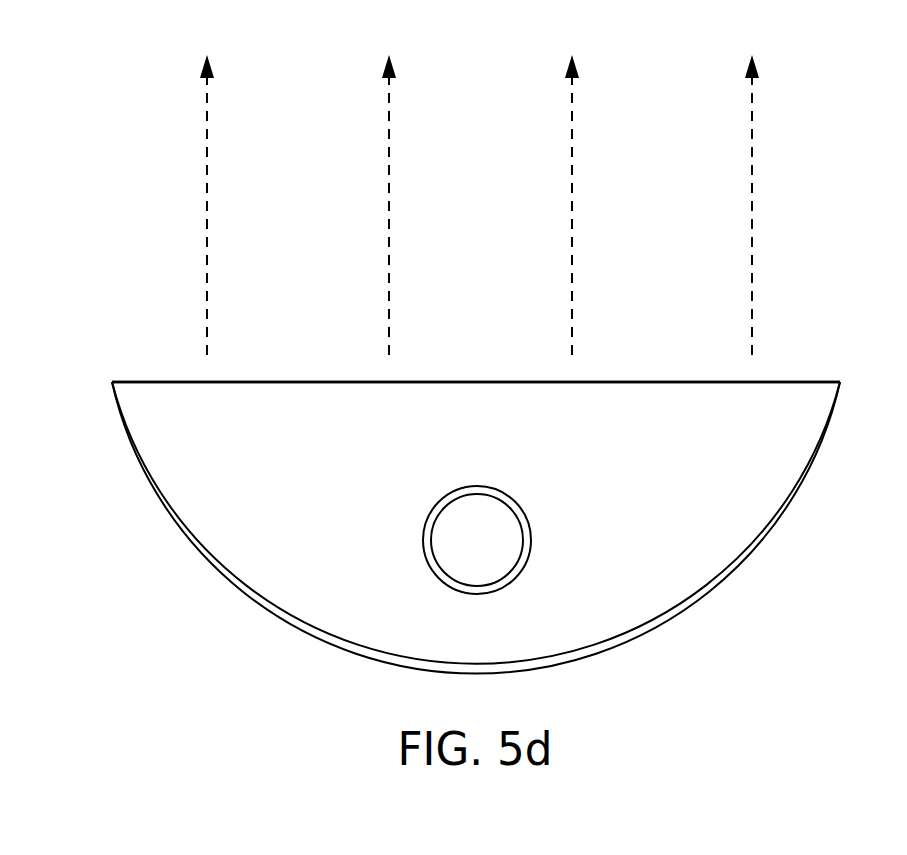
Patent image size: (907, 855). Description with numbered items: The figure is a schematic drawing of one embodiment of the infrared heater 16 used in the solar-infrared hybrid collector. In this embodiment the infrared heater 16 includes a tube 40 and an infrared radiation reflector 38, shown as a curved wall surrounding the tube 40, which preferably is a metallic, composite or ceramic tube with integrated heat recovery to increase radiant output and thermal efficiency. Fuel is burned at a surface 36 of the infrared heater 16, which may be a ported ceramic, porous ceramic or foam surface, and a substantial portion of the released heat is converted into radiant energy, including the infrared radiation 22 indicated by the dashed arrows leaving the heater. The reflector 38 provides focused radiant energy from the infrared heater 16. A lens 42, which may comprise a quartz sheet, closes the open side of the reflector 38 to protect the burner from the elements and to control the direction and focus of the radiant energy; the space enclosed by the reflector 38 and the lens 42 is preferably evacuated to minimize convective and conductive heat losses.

The infrared heater 16 is at (808, 132).
The infrared radiation 22 is at (750, 250).
The surface 36 is at (531, 542).
The infrared radiation reflector 38 is at (723, 569).
The tube 40 is at (430, 511).
The lens 42 is at (240, 382).